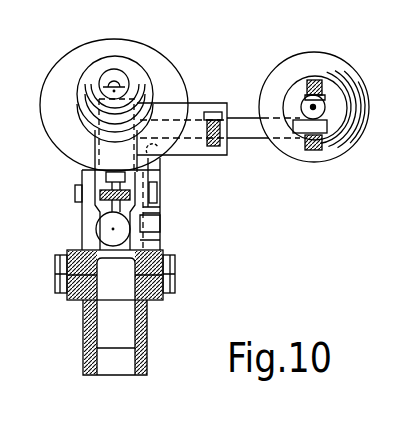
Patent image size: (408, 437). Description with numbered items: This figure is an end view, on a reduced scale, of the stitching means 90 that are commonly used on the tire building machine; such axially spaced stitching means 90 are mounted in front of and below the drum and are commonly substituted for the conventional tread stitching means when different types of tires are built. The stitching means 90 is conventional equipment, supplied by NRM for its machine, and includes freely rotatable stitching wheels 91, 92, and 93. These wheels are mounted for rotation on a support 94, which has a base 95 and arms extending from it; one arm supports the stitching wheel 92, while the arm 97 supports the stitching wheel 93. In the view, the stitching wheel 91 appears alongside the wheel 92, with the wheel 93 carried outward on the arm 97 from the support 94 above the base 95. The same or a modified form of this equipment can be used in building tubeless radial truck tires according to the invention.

The stitching means 90 is at (206, 78).
The stitching wheel 91 is at (63, 60).
The stitching wheel 92 is at (142, 96).
The stitching wheel 93 is at (312, 163).
The support 94 is at (97, 203).
The base 95 is at (85, 332).
The arm 97 is at (246, 140).